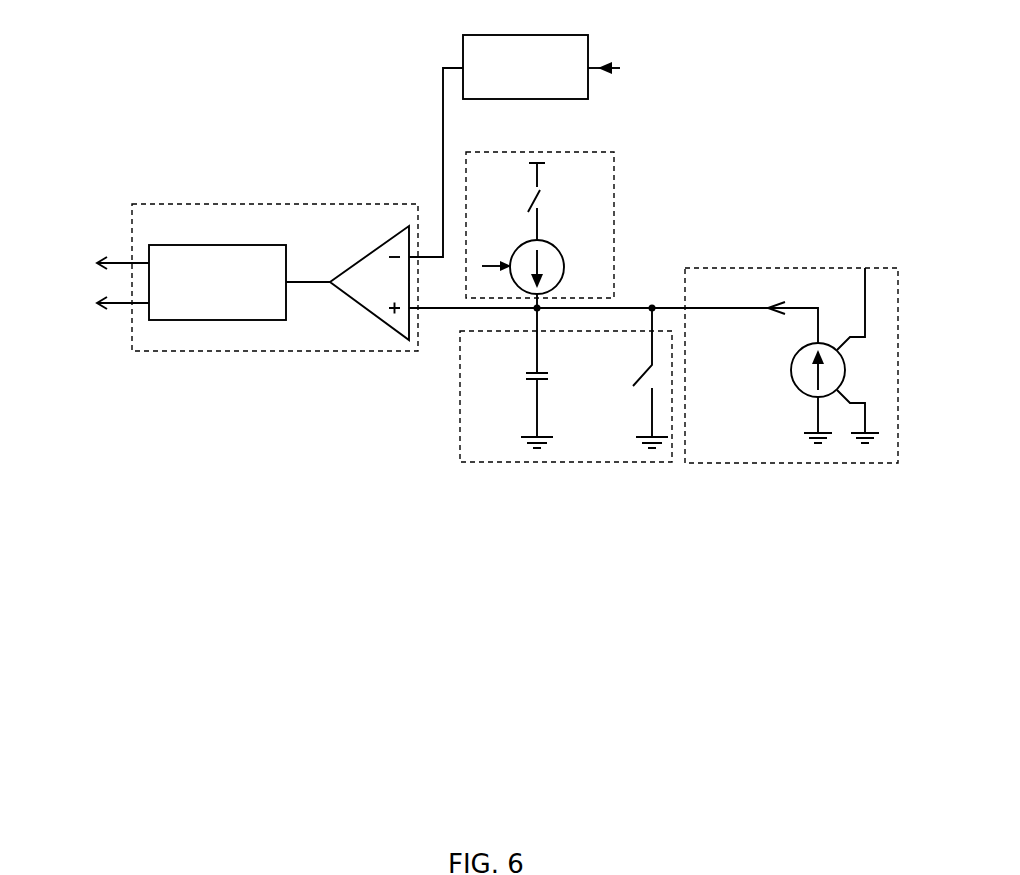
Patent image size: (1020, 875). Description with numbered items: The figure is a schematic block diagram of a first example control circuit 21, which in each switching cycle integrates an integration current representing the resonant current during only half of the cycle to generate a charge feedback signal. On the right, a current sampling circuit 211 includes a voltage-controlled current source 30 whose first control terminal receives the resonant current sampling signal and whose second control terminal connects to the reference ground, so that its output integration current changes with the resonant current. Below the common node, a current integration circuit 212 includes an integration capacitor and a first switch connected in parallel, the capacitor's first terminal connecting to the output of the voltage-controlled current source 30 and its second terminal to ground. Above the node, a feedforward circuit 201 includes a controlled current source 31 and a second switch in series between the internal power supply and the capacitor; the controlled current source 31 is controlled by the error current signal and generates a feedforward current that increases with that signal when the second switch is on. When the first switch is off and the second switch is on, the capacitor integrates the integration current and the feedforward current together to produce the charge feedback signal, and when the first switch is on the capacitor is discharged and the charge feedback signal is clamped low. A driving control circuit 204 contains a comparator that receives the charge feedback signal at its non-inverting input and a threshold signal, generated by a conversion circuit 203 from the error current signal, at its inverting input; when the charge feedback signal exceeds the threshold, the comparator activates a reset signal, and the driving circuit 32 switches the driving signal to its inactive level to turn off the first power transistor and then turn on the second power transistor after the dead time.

The control circuit 21 is at (827, 184).
The feedforward circuit 201 is at (614, 190).
The conversion circuit 203 is at (549, 100).
The driving control circuit 204 is at (314, 204).
The current sampling circuit 211 is at (733, 268).
The current integration circuit 212 is at (458, 412).
The voltage-controlled current source 30 is at (797, 400).
The controlled current source 31 is at (563, 258).
The driving circuit 32 is at (197, 243).